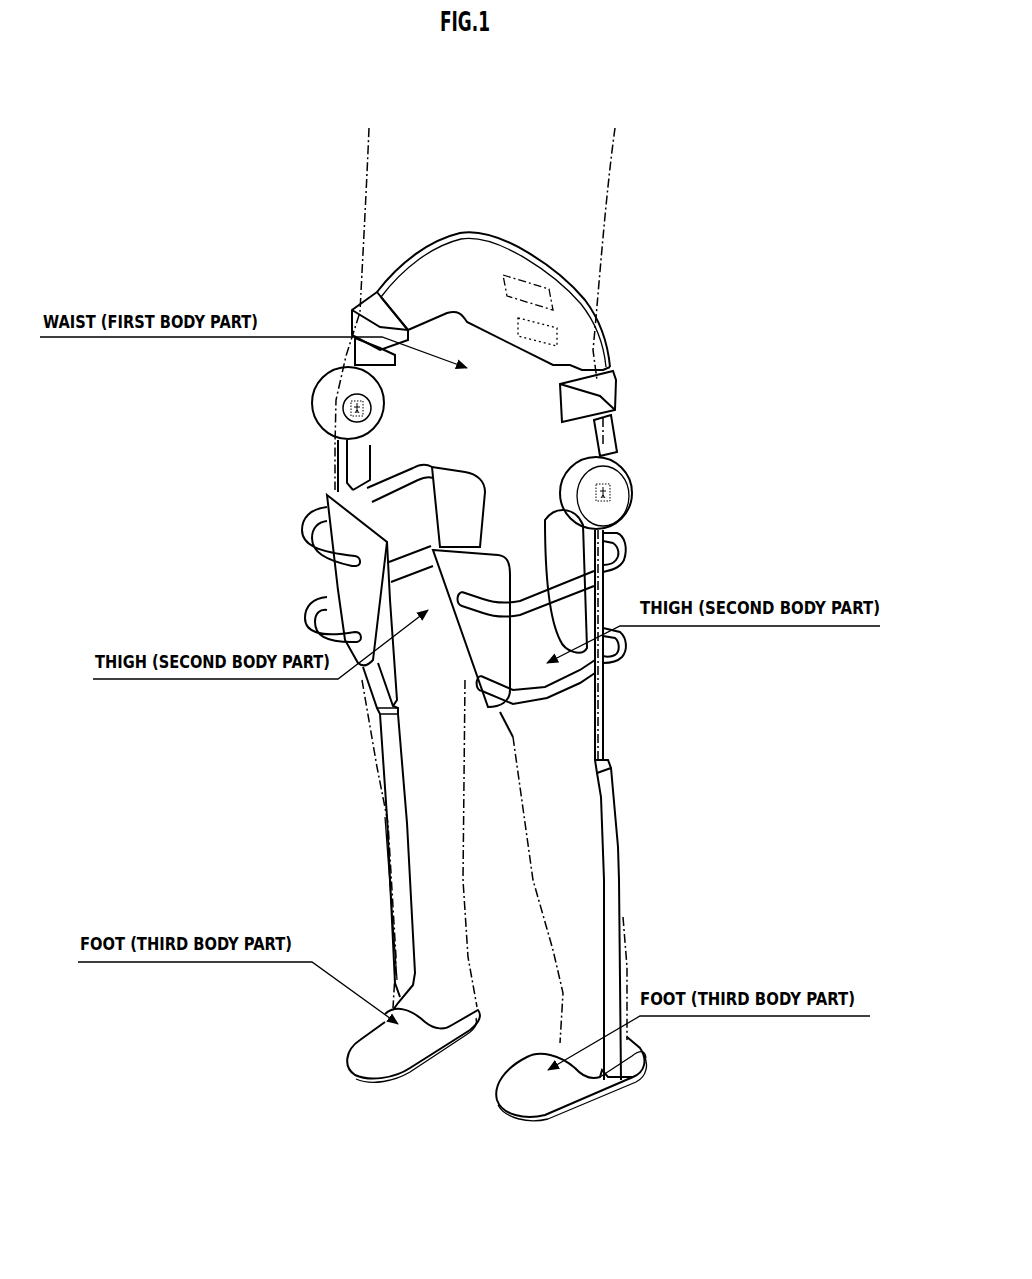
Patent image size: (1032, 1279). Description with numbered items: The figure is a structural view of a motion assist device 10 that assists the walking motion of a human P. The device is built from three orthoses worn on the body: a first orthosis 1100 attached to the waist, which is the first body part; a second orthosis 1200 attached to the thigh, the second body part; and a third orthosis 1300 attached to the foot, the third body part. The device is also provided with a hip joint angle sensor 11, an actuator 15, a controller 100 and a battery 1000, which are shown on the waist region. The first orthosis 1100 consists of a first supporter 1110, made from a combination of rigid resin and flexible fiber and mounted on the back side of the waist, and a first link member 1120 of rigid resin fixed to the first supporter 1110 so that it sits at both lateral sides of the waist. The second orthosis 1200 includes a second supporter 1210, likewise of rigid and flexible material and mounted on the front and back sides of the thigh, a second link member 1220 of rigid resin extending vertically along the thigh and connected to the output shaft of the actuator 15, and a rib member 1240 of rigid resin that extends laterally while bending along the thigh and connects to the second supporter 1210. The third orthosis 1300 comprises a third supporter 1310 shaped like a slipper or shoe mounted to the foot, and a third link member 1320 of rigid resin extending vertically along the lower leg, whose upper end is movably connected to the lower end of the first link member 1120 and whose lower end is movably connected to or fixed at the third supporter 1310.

The human P is at (353, 157).
The motion assist device 10 is at (687, 265).
The hip joint angle sensor 11 is at (337, 394).
The actuator 15 is at (466, 433).
The controller 100 is at (555, 285).
The battery 1000 is at (560, 327).
The first orthosis 1100 is at (548, 246).
The first supporter 1110 is at (472, 254).
The first link member 1120 is at (382, 313).
The second orthosis 1200 is at (255, 537).
The second supporter 1210 is at (466, 482).
The second link member 1220 is at (593, 610).
The rib member 1240 is at (307, 553).
The third orthosis 1300 is at (345, 810).
The third supporter 1310 is at (362, 1025).
The third link member 1320 is at (618, 882).